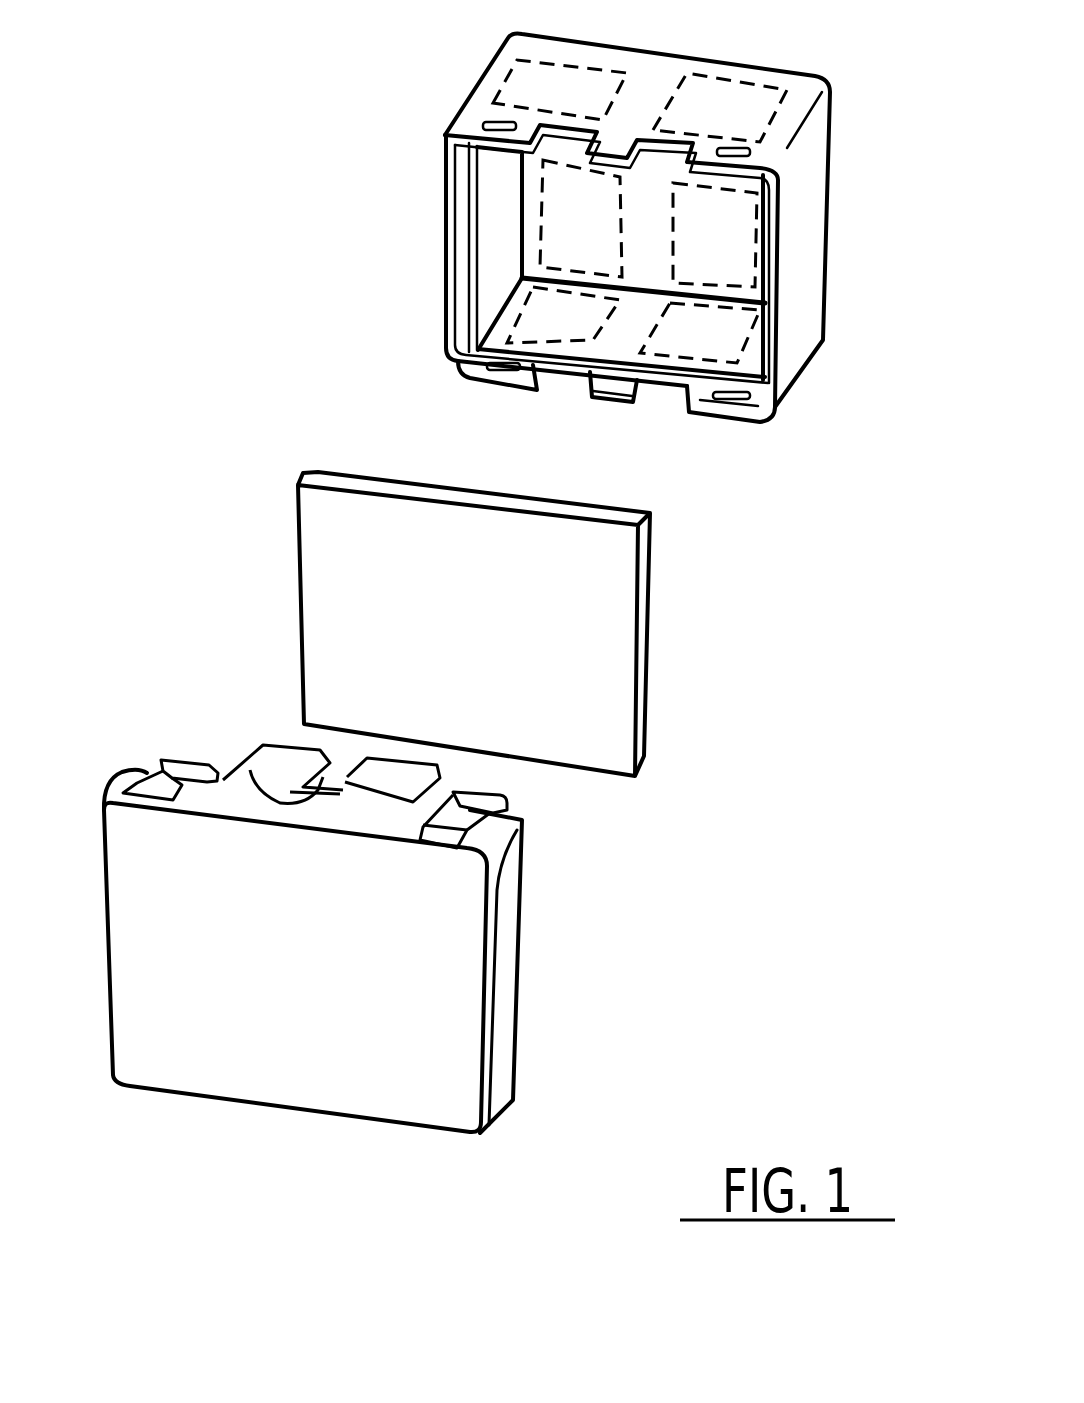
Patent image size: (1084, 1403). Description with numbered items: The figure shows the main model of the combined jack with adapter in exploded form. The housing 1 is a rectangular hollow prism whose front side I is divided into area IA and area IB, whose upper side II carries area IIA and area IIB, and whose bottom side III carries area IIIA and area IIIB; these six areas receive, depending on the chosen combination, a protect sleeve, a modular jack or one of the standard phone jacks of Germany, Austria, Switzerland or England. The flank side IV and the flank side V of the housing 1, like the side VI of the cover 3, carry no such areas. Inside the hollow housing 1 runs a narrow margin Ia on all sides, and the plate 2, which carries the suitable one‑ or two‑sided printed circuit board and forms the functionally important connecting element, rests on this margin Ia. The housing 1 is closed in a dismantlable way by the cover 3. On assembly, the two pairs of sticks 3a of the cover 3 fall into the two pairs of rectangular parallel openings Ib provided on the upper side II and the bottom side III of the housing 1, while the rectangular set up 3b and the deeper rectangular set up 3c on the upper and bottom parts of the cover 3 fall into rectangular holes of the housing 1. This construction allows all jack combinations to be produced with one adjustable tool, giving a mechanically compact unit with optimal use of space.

The housing 1 is at (845, 233).
The plate 2 is at (650, 635).
The cover 3 is at (507, 985).
The sticks 3a is at (168, 758).
The rectangular set up 3b is at (397, 778).
The deep rectangular set up 3c is at (250, 770).
The front side I is at (543, 207).
The narrow margin Ia is at (543, 207).
The rectangular parallel openings Ib is at (478, 126).
The area IA is at (728, 263).
The area IB is at (587, 240).
The upper side II is at (812, 93).
The area IIA is at (743, 100).
The area IIB is at (548, 82).
The bottom side III is at (583, 378).
The area IIIA is at (713, 342).
The area IIIB is at (543, 332).
The flank side IV is at (447, 173).
The flank side V is at (800, 227).
The side of cover VI is at (323, 1067).